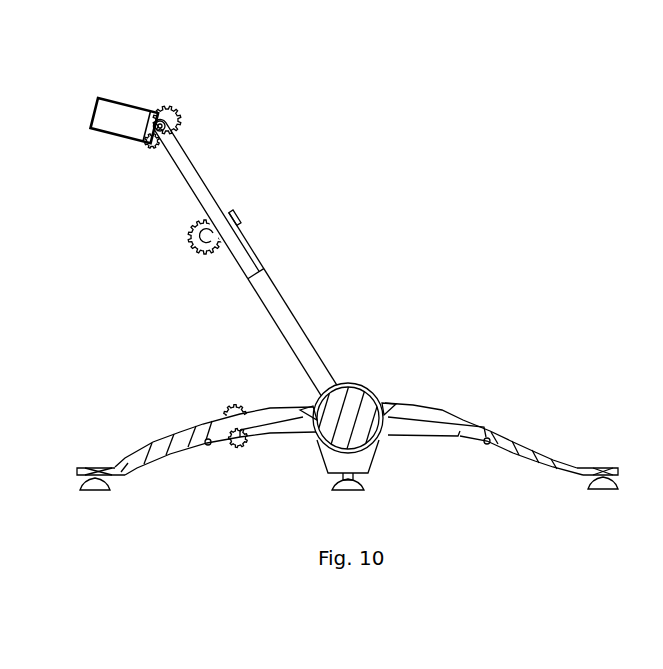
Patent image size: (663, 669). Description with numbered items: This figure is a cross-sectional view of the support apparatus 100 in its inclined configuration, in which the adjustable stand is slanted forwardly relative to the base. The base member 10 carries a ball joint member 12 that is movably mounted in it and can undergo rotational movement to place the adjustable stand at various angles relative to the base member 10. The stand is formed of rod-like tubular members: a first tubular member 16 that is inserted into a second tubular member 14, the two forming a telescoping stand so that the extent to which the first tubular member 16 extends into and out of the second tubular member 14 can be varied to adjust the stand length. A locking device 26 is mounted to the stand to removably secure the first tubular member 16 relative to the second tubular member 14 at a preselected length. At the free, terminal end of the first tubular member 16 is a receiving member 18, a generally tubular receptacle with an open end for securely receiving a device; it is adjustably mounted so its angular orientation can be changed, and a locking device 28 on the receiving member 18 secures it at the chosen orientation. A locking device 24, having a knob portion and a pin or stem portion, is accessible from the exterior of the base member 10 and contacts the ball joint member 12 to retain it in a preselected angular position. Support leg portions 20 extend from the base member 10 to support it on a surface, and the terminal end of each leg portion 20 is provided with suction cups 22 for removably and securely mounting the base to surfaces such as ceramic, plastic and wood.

The support apparatus 100 is at (347, 147).
The base member 10 is at (435, 408).
The ball joint member 12 is at (357, 381).
The second tubular member 14 is at (295, 313).
The first tubular member 16 is at (208, 177).
The receiving member 18 is at (118, 100).
The support leg portion 20 is at (148, 445).
The suction cup 22 is at (93, 490).
The locking device (first locking device) 24 is at (234, 407).
The locking device (second locking device) 26 is at (192, 249).
The locking device (third locking device) 28 is at (173, 112).